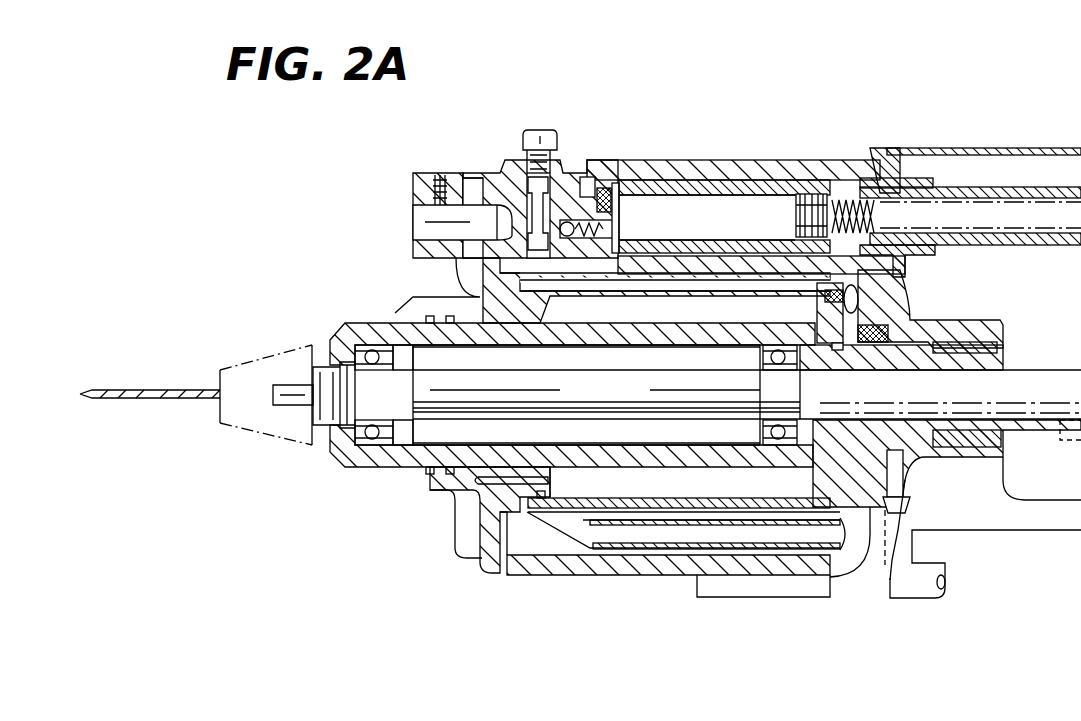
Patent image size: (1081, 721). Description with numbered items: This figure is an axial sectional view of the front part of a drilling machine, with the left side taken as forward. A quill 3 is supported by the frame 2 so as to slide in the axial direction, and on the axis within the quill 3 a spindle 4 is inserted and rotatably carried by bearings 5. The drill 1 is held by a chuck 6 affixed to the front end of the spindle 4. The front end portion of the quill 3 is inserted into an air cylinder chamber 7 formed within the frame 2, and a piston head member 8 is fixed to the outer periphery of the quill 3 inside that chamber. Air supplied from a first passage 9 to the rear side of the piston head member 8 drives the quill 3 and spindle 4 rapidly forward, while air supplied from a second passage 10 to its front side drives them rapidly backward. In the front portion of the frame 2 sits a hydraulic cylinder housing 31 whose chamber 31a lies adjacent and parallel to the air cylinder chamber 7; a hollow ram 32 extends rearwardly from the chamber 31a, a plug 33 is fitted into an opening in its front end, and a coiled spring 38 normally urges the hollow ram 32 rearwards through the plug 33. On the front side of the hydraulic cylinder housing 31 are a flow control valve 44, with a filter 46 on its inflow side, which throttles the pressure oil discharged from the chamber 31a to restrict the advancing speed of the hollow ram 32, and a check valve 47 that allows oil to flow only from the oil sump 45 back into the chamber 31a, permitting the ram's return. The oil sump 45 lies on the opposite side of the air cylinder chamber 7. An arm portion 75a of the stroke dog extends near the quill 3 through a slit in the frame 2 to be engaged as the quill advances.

The drill 1 is at (146, 394).
The frame 2 is at (752, 163).
The quill 3 is at (684, 332).
The spindle 4 is at (747, 395).
The bearings 5 is at (372, 350).
The chuck 6 is at (242, 368).
The air cylinder chamber 7 is at (686, 508).
The piston head member 8 is at (850, 320).
The first passage 9 is at (890, 470).
The second passage 10 is at (550, 484).
The hydraulic cylinder housing 31 is at (718, 194).
The hydraulic cylinder chamber 31a is at (707, 217).
The hollow ram 32 is at (995, 190).
The plug 33 is at (800, 205).
The coiled spring 38 is at (846, 200).
The flow control valve 44 is at (588, 192).
The oil sump 45 is at (545, 555).
The filter 46 is at (604, 212).
The check valve 47 is at (572, 238).
The arm portion 75a is at (1042, 460).